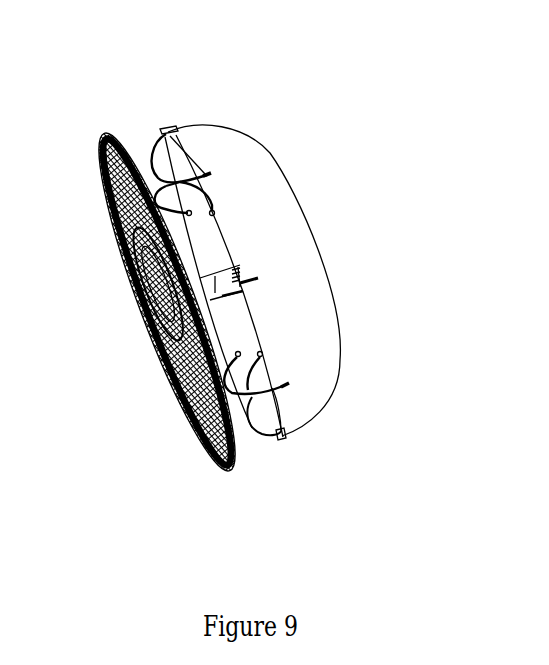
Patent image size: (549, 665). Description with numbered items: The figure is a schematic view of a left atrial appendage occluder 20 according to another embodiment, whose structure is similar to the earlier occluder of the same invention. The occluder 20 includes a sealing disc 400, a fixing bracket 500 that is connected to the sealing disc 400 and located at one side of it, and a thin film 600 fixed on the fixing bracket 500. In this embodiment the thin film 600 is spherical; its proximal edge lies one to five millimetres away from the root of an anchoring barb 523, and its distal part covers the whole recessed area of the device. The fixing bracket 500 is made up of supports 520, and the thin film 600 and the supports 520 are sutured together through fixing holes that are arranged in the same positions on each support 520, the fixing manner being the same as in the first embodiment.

The left atrial appendage occluder 20 is at (342, 178).
The sealing disc 400 is at (148, 280).
The fixing bracket 500 is at (185, 160).
The support 520 is at (258, 437).
The anchoring barb 523 is at (284, 440).
The thin film 600 is at (312, 403).